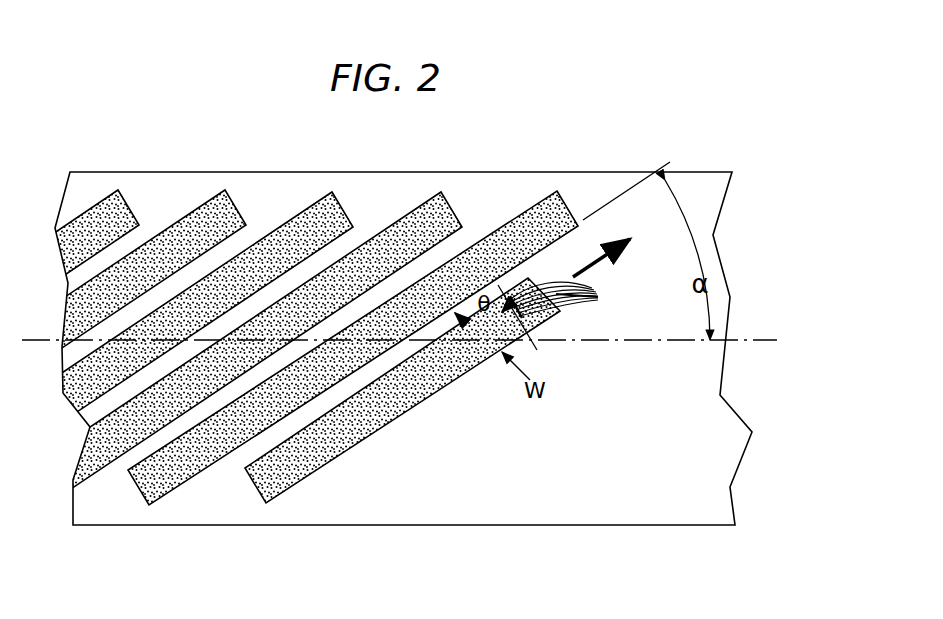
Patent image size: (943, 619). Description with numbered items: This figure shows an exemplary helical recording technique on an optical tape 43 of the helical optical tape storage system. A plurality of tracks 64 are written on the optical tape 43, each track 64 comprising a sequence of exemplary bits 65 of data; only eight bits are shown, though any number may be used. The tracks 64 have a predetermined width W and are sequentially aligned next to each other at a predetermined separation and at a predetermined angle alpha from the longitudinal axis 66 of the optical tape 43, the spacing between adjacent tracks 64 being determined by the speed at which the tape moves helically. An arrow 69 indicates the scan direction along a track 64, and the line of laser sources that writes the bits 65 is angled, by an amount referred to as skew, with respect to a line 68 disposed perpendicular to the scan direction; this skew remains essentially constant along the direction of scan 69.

The tracks 64 is at (140, 203).
The optical tape 43 is at (678, 180).
The arrow indicating scan direction 69 is at (606, 258).
The bits 65 is at (570, 298).
The line perpendicular to the scan direction 68 is at (537, 328).
The longitudinal axis 66 is at (762, 340).